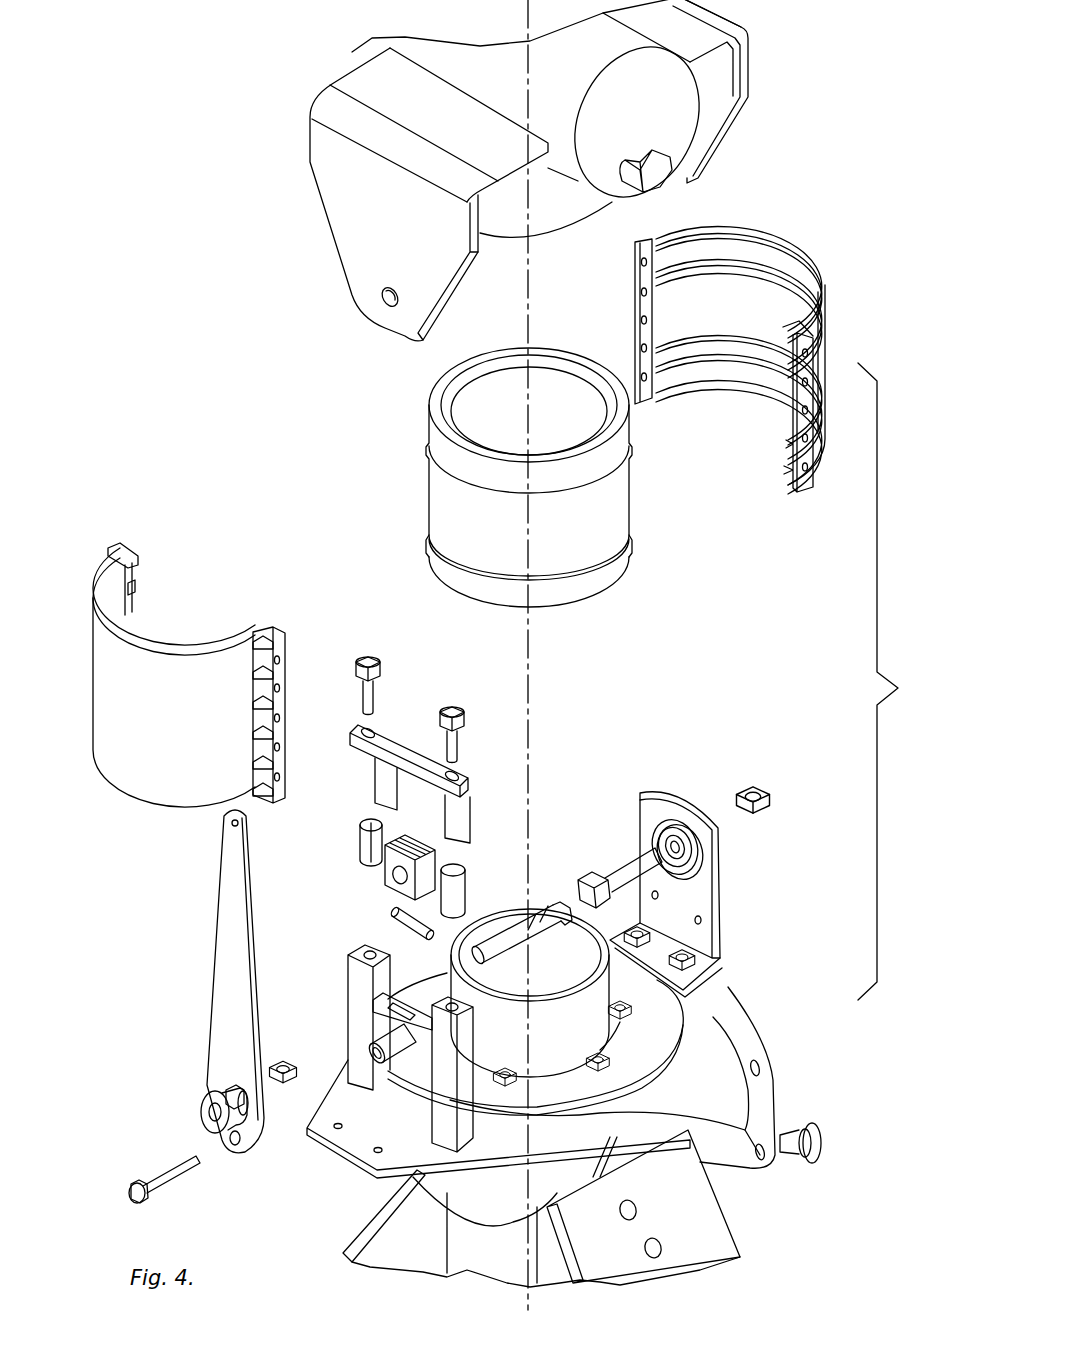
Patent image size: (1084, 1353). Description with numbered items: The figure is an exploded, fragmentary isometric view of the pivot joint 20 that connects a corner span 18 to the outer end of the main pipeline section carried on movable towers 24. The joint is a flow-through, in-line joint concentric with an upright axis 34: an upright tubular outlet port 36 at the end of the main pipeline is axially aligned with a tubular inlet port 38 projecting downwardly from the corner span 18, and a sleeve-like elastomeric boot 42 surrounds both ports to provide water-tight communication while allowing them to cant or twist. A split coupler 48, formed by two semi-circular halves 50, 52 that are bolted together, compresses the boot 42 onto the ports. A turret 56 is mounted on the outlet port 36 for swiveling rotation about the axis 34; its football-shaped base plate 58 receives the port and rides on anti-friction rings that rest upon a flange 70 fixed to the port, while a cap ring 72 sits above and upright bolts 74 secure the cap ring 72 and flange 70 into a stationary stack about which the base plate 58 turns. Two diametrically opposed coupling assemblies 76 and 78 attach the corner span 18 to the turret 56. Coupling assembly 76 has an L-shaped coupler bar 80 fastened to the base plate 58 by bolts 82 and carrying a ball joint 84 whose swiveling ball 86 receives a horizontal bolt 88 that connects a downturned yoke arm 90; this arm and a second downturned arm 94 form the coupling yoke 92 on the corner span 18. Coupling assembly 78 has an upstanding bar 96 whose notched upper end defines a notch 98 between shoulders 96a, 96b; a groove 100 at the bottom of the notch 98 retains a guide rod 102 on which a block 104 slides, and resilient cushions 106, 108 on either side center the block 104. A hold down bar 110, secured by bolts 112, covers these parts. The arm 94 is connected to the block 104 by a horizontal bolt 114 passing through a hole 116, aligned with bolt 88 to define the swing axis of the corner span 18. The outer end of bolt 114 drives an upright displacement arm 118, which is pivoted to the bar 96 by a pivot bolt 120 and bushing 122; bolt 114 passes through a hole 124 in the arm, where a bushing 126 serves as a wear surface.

The corner span 18 is at (362, 35).
The pivot joint 20 is at (296, 433).
The movable tower 24 is at (723, 1237).
The upright axis 34 is at (530, 25).
The outlet port 36 is at (556, 989).
The inlet port 38 is at (543, 230).
The boot 42 is at (618, 513).
The split coupler 48 is at (778, 224).
The semi-circular half 50 is at (808, 267).
The semi-circular half 52 is at (160, 643).
The turret 56 is at (353, 1178).
The base plate 58 is at (320, 1127).
The flange 70 is at (648, 1118).
The cap ring 72 is at (595, 1044).
The upright bolts 74 is at (600, 1060).
The coupling assembly 76 is at (703, 790).
The coupling assembly 78 is at (312, 914).
The coupler bar 80 is at (702, 888).
The bolts 82 is at (682, 957).
The ball joint 84 is at (652, 828).
The swiveling ball 86 is at (677, 853).
The bolt 88 is at (618, 877).
The yoke arm 90 is at (730, 67).
The coupling yoke 92 is at (745, 25).
The downturned arm 94 is at (355, 245).
The bar 96 is at (400, 1048).
The shoulder 96a is at (355, 975).
The shoulder 96b is at (447, 1025).
The notch 98 is at (362, 1017).
The groove 100 is at (400, 1017).
The guide rod 102 is at (407, 923).
The block 104 is at (424, 871).
The resilient cushion 106 is at (362, 840).
The resilient cushion 108 is at (458, 897).
The hold down bar 110 is at (402, 743).
The bolts 112 is at (368, 664).
The bolt 114 is at (535, 937).
The hole 116 is at (400, 873).
The displacement arm 118 is at (228, 957).
The pivot bolt 120 is at (153, 1183).
The bushing 122 is at (393, 1057).
The hole 124 is at (237, 1090).
The bushing 126 is at (205, 1100).